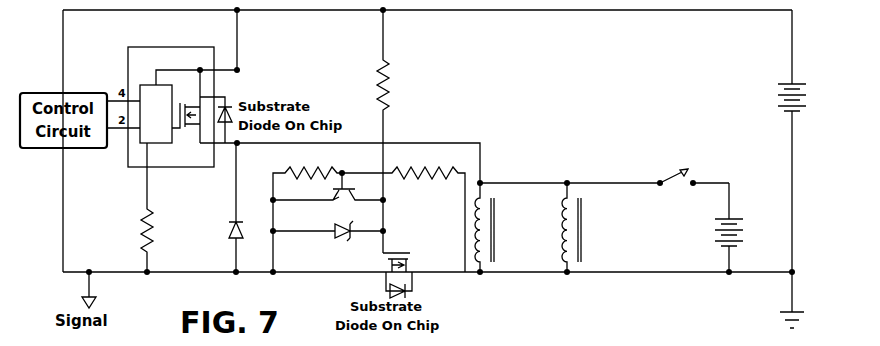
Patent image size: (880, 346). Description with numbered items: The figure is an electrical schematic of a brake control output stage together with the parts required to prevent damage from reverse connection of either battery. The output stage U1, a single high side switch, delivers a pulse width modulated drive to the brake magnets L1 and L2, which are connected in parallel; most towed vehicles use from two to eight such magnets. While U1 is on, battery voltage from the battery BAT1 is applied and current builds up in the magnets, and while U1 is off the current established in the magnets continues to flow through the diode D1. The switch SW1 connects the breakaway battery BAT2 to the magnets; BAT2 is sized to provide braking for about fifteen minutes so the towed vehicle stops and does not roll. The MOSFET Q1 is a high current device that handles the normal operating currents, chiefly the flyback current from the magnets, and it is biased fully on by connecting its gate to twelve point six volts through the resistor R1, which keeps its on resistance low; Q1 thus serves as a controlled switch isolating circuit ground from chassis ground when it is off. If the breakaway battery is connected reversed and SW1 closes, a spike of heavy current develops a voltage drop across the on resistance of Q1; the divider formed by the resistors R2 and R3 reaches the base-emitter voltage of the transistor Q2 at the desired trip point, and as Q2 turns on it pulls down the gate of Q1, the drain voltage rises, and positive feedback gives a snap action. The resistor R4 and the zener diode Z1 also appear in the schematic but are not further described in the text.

The output stage U1 is at (183, 107).
The resistor R1 is at (161, 240).
The divider resistor R2 is at (326, 214).
The divider resistor R3 is at (424, 212).
The resistor R4 is at (394, 131).
The diode D1 is at (246, 209).
The MOSFET Q1 is at (408, 275).
The transistor Q2 is at (328, 195).
The zener diode Z1 is at (328, 238).
The brake magnet L1 is at (510, 227).
The brake magnet L2 is at (597, 227).
The switch SW1 is at (693, 190).
The 12.6V battery BAT1 is at (772, 142).
The breakaway battery BAT2 is at (743, 229).